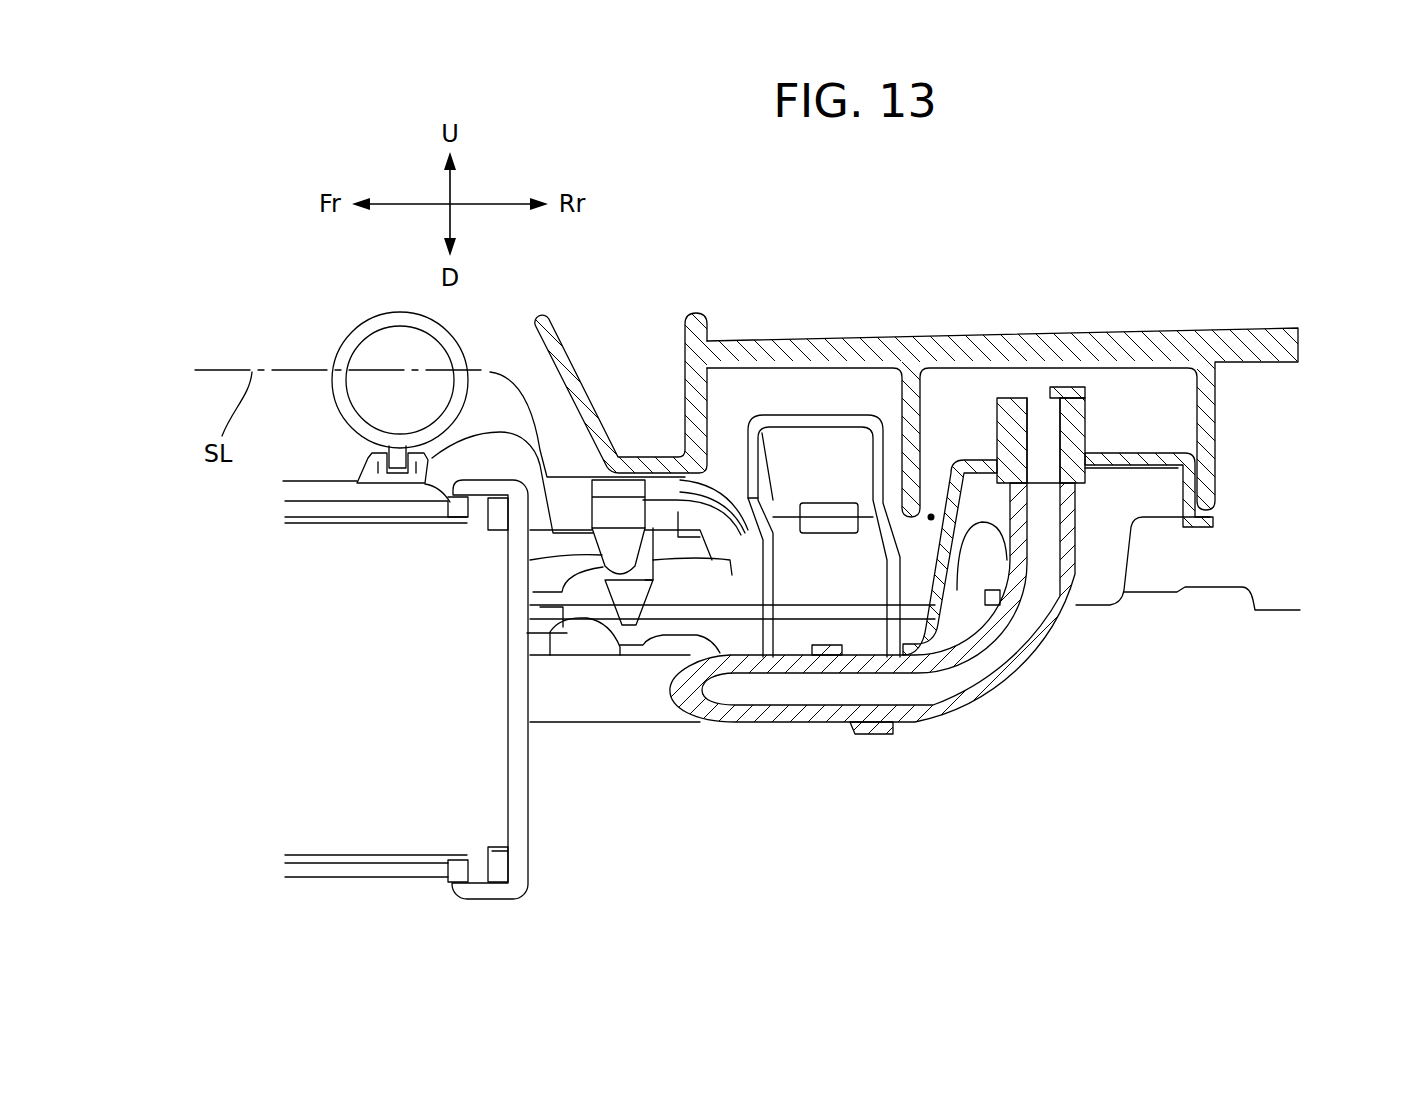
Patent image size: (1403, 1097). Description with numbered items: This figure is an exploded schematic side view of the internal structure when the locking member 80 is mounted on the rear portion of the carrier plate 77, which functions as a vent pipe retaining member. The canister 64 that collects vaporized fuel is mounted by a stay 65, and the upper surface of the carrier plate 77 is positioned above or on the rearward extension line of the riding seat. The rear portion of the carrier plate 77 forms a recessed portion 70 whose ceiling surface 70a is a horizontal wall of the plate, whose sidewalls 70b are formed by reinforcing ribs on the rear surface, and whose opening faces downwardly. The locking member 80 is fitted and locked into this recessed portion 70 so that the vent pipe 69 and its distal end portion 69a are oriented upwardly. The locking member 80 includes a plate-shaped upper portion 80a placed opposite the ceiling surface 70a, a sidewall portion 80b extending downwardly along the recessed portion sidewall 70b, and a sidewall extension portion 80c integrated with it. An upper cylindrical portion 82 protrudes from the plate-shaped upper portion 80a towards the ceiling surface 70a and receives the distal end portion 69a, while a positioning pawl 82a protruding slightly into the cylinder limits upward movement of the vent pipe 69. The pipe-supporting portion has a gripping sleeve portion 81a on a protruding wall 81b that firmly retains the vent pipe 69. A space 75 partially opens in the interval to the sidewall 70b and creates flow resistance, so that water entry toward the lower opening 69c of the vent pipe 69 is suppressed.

The canister 64 is at (540, 873).
The stay 65 is at (337, 345).
The vent pipe 69 is at (877, 541).
The distal end portion 69a is at (1041, 413).
The opening of the vent pipe 69c is at (1033, 397).
The recessed portion 70 is at (1015, 385).
The ceiling surface 70a is at (1137, 366).
The sidewall of the recessed portion 70b is at (900, 400).
The space 75 is at (931, 515).
The carrier plate 77 is at (938, 356).
The locking member 80 is at (1188, 512).
The plate-shaped upper portion 80a is at (1110, 450).
The sidewall portion 80b is at (1118, 503).
The sidewall extension portion 80c is at (1103, 577).
The gripping sleeve portion 81a is at (873, 737).
The protruding wall 81b is at (932, 583).
The upper cylindrical portion 82 is at (1025, 366).
The positioning pawl 82a is at (1075, 388).